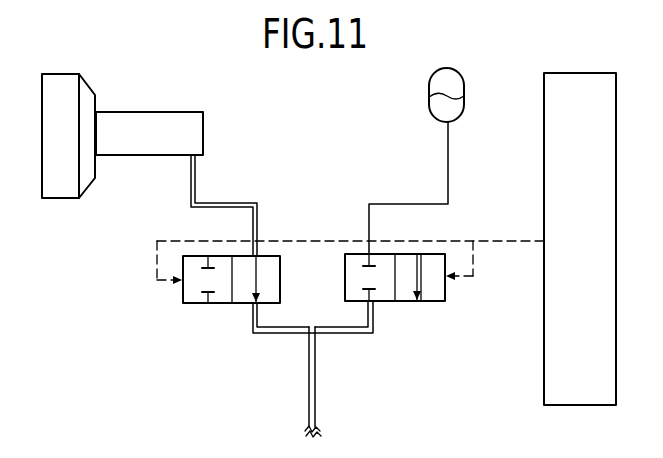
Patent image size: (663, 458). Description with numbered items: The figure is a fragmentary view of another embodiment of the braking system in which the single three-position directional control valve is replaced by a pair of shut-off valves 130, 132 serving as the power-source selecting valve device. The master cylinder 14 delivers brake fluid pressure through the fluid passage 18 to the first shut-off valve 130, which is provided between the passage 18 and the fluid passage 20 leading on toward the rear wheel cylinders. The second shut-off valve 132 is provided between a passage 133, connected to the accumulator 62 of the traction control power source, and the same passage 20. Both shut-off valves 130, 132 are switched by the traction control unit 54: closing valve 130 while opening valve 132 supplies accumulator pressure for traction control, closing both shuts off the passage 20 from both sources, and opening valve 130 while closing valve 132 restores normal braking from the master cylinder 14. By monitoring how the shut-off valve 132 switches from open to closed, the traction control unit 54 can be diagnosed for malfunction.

The master cylinder 14 is at (194, 133).
The fluid passage 18 is at (190, 196).
The fluid passage 20 is at (316, 386).
The traction control unit 54 is at (577, 80).
The accumulator 62 is at (446, 68).
The shut-off valve 130 is at (192, 305).
The shut-off valve 132 is at (431, 303).
The passage 133 is at (449, 178).